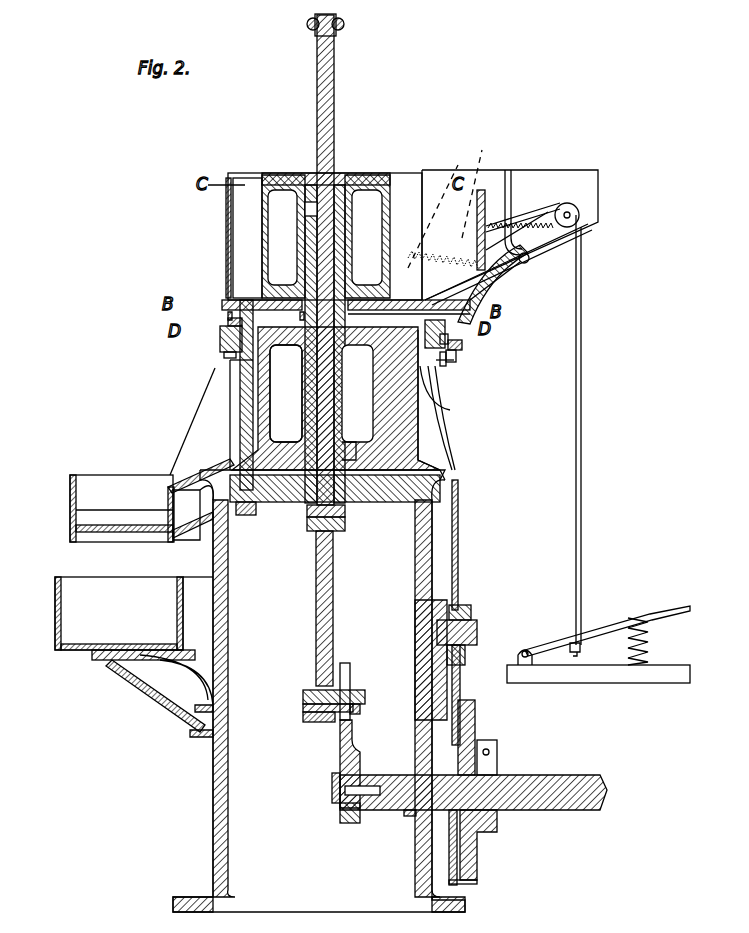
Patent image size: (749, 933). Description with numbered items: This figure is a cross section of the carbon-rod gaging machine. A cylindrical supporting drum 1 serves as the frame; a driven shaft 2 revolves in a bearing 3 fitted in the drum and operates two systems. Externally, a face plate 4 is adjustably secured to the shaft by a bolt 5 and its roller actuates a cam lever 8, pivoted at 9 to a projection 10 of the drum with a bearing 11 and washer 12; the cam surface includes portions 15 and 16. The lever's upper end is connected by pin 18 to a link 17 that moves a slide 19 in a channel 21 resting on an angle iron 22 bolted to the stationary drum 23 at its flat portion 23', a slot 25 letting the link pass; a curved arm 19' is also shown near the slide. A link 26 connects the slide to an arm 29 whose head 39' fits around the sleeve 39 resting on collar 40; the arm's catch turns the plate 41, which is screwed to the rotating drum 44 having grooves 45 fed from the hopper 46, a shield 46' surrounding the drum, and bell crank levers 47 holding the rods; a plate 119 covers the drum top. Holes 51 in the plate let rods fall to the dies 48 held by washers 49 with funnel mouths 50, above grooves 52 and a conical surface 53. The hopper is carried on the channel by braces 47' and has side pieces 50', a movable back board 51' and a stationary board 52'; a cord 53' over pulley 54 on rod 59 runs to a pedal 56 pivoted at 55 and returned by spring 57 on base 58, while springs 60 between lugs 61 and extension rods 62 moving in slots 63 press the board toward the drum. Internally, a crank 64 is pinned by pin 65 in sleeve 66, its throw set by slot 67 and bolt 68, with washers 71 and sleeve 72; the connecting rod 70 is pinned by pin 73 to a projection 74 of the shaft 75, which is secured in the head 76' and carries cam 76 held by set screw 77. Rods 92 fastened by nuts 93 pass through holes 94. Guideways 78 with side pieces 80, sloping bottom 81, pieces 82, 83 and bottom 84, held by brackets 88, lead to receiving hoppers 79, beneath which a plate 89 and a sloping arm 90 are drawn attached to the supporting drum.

The cylindrical supporting drum 1 is at (210, 842).
The shaft 2 is at (607, 790).
The bearing 3 is at (410, 815).
The disk or face plate 4 is at (478, 852).
The bolt 5 is at (489, 752).
The cam lever 8 is at (456, 458).
The pivot 9 is at (478, 632).
The projection 10 is at (462, 602).
The bearing 11 is at (470, 612).
The washer 12 is at (462, 660).
The cam surface portion 15 is at (490, 745).
The cam surface portion 16 is at (462, 884).
The link 17 is at (450, 363).
The pin 18 is at (456, 356).
The slide 19 is at (481, 351).
The curved arm 19' is at (566, 284).
The channel 21 is at (455, 340).
The angle iron 22 is at (445, 362).
The stationary drum 23 is at (433, 400).
The flat portion 23' is at (455, 392).
The slot 25 is at (439, 418).
The link 26 is at (472, 304).
The arm 29 is at (447, 330).
The sleeve 39 is at (336, 398).
The head 39' is at (286, 393).
The collar 40 is at (348, 452).
The plate 41 is at (228, 303).
The rotating drum 44 is at (262, 248).
The grooves 45 is at (240, 212).
The hopper 46 is at (342, 215).
The shield 46' is at (185, 238).
The bell crank levers 47 is at (339, 319).
The braces 47' is at (549, 281).
The dies 48 is at (222, 345).
The washers 49 is at (225, 340).
The mouth 50 is at (221, 320).
The side pieces 50' is at (536, 222).
The holes 51 is at (202, 319).
The movable back board 51' is at (535, 194).
The grooves 52 is at (211, 395).
The stationary back board 52' is at (551, 177).
The conical surface 53 is at (490, 470).
The cord 53' is at (548, 185).
The pulley 54 is at (572, 210).
The pivot 55 is at (528, 650).
The pedal 56 is at (678, 608).
The spring 57 is at (650, 640).
The base 58 is at (650, 683).
The rod 59 is at (571, 215).
The springs 60 is at (483, 188).
The lugs 61 is at (454, 196).
The extension rods 62 is at (480, 245).
The slots 63 is at (580, 224).
The crank 64 is at (358, 756).
The pin 65 is at (332, 806).
The sleeve 66 is at (335, 788).
The slot 67 is at (352, 680).
The bolt 68 is at (304, 700).
The connecting rod 70 is at (334, 604).
The washers 71 is at (356, 716).
The sleeve 72 is at (318, 724).
The pin 73 is at (345, 528).
The projection 74 is at (346, 510).
The shaft 75 is at (334, 88).
The cam 76 is at (342, 15).
The head 76' is at (322, 501).
The set screw 77 is at (340, 30).
The guideways 78 is at (121, 508).
The receiving hoppers 79 is at (134, 613).
The side pieces 80 is at (178, 447).
The sloping bottom 81 is at (193, 513).
The piece 82 is at (70, 522).
The piece 83 is at (172, 544).
The bottom 84 is at (100, 532).
The brackets 88 is at (196, 528).
The plate 89 is at (100, 662).
The arm 90 is at (172, 700).
The rods 92 is at (245, 416).
The nuts 93 is at (248, 515).
The holes 94 is at (235, 456).
The plate 119 is at (275, 172).